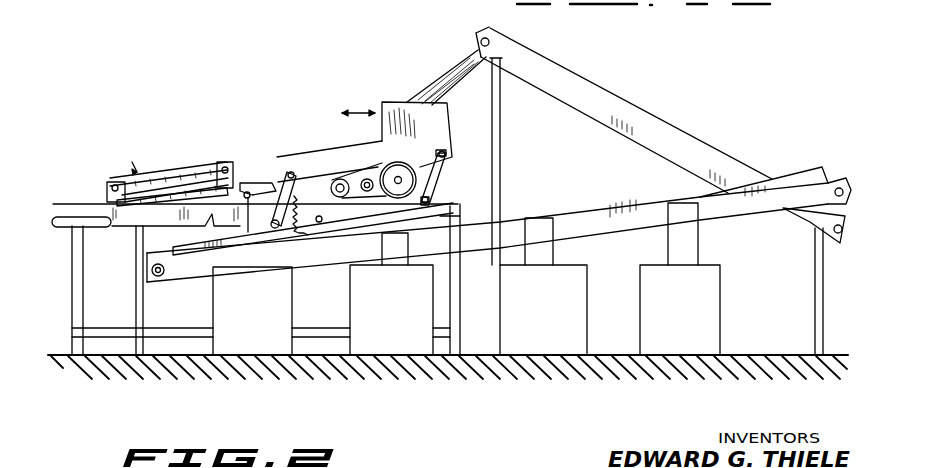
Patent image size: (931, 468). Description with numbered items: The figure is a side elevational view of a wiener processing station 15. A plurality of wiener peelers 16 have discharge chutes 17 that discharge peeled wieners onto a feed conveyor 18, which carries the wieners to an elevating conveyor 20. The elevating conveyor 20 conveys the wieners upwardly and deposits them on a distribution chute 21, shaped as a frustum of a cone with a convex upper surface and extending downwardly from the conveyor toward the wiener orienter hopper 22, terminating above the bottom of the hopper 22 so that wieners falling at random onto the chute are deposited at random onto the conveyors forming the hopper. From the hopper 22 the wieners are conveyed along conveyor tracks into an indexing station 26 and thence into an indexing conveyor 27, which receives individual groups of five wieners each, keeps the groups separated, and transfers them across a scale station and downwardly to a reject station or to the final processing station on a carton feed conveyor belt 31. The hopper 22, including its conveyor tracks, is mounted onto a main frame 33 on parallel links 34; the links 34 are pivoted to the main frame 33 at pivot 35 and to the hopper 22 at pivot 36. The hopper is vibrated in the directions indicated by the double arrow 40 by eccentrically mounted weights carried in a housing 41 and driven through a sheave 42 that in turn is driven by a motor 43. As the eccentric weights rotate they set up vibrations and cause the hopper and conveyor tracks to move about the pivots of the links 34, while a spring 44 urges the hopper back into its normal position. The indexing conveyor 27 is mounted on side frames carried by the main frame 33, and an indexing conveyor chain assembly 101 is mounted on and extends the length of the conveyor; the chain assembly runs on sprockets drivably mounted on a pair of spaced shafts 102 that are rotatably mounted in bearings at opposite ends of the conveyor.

The wiener processing station 15 is at (272, 130).
The wiener peelers 16 is at (395, 333).
The discharge chutes 17 is at (680, 248).
The feed conveyor 18 is at (580, 210).
The elevating conveyor 20 is at (580, 82).
The distribution chute 21 is at (453, 67).
The wiener orienter hopper 22 is at (357, 122).
The indexing station 26 is at (247, 182).
The indexing conveyor 27 is at (144, 164).
The carton feed conveyor belt 31 is at (63, 230).
The main frame 33 is at (95, 205).
The parallel links 34 is at (433, 168).
The pivot 35 is at (428, 200).
The pivot 36 is at (445, 152).
The double arrow 40 is at (403, 104).
The housing 41 is at (384, 121).
The sheave 42 is at (400, 199).
The motor 43 is at (341, 178).
The spring 44 is at (300, 218).
The indexing conveyor chain assembly 101 is at (133, 162).
The spaced shafts 102 is at (107, 185).